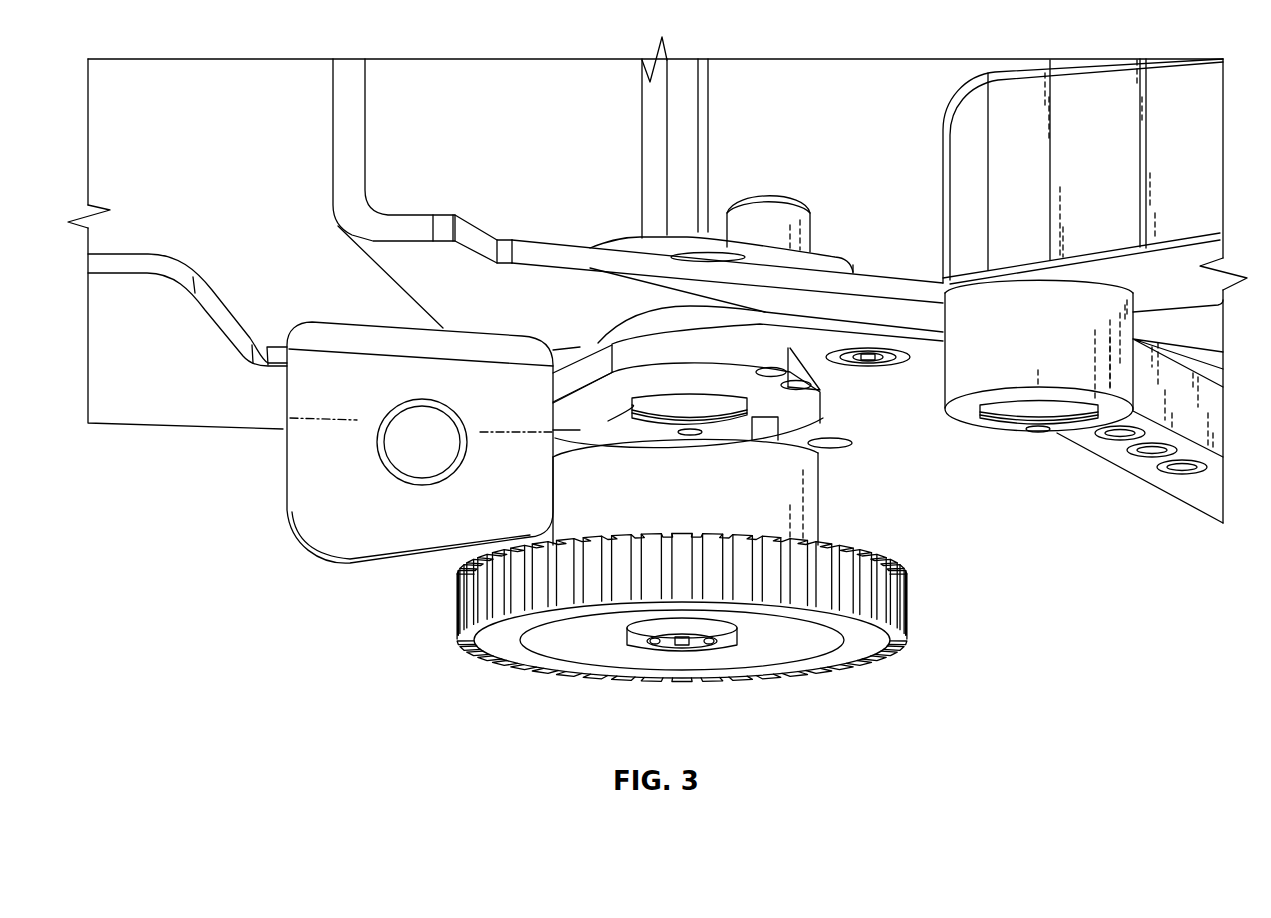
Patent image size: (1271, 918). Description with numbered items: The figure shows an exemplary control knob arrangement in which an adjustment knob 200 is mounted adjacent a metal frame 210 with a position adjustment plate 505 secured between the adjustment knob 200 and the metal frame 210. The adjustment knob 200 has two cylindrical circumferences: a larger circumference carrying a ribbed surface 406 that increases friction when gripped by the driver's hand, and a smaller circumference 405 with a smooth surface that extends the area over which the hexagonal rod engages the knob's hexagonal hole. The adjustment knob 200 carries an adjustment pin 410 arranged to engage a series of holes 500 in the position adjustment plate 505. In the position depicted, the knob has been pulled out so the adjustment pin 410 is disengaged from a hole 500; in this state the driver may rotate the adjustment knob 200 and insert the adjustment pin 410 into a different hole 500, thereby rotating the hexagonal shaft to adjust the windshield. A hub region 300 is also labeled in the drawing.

The adjustment knob 200 is at (676, 608).
The metal frame 210 is at (1020, 445).
The hub 300 is at (660, 433).
The smaller circumference 405 is at (810, 497).
The ribbed surface 406 is at (905, 604).
The adjustment pin 410 is at (765, 441).
The holes 500 is at (818, 388).
The position adjustment plate 505 is at (778, 363).